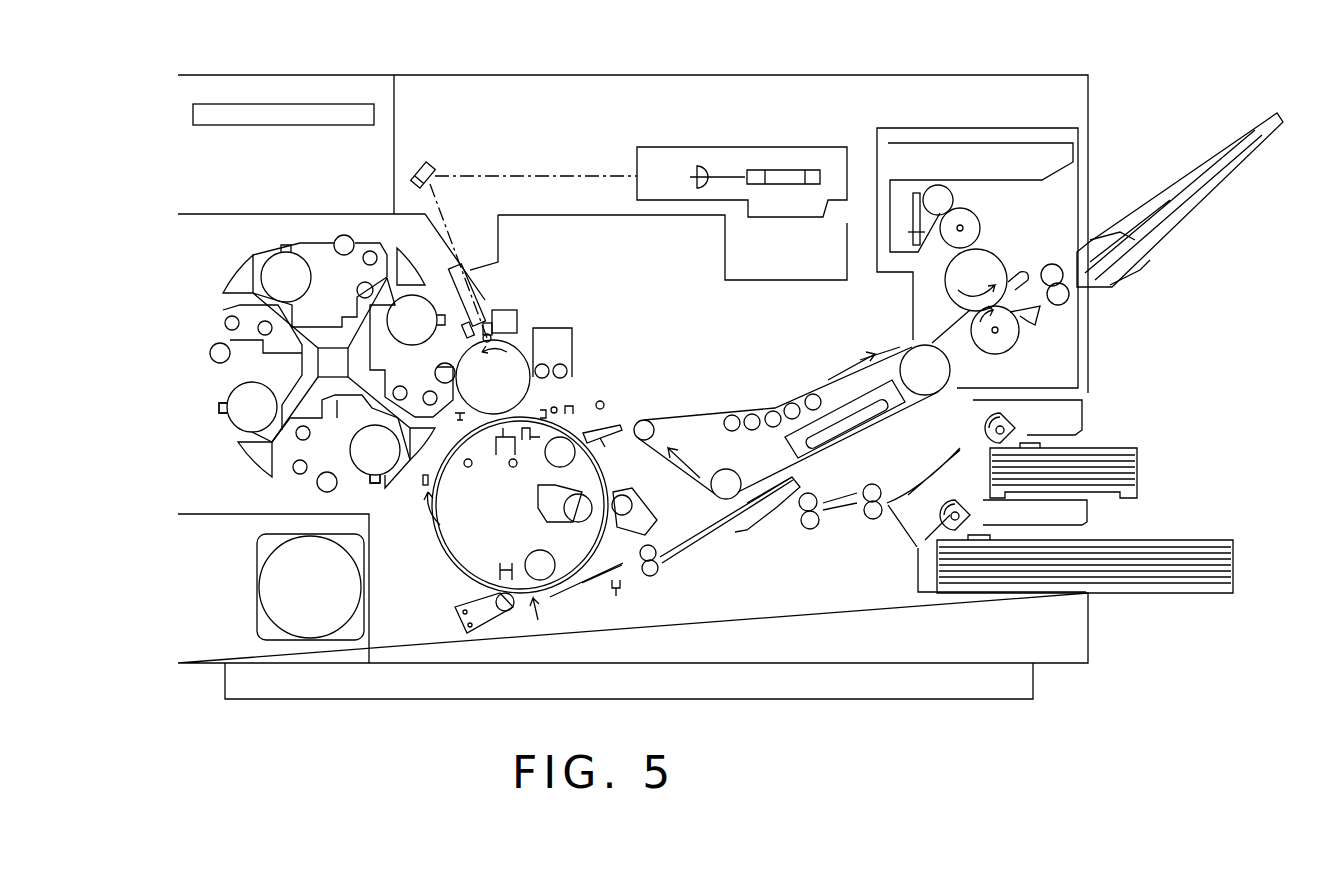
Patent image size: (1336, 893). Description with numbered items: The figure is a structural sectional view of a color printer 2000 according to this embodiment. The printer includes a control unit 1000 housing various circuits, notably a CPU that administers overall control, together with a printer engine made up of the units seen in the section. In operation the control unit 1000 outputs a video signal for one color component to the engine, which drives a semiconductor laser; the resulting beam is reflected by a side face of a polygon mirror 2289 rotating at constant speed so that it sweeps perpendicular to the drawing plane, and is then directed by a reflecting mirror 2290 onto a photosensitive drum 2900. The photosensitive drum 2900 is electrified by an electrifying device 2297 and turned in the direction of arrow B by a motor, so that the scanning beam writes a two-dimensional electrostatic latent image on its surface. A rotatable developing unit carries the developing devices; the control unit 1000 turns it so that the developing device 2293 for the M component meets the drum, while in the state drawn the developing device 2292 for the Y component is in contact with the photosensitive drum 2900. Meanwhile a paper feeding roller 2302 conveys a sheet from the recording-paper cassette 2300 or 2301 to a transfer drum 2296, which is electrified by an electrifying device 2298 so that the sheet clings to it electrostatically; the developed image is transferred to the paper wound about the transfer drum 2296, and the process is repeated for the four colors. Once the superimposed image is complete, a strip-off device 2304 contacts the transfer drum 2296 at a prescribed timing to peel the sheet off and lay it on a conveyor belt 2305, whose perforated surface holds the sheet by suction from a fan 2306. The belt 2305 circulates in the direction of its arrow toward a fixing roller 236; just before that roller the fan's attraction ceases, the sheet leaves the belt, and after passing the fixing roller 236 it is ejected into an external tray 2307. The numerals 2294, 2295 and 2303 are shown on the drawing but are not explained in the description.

The control unit 1000 is at (238, 104).
The color printer 2000 is at (178, 245).
The polygon mirror 2289 is at (785, 170).
The reflecting mirror 2290 is at (430, 164).
The developing device 2292 is at (458, 262).
The developing device 2293 is at (402, 468).
The developing unit C 2294 is at (228, 412).
The rotary developing device 2295 is at (283, 253).
The transfer drum 2296 is at (458, 585).
The electrifying device 2297 is at (525, 310).
The electrifying device 2298 is at (498, 455).
The recording-paper cassette 2300 is at (1120, 448).
The recording-paper cassette 2301 is at (1160, 540).
The paper feeding roller 2302 is at (1015, 420).
The lower feed roller 2303 is at (940, 517).
The strip-off device 2304 is at (620, 420).
The conveyor belt 2305 is at (685, 420).
The fan 2306 is at (898, 405).
The external tray 2307 is at (1163, 178).
The photosensitive drum 2900 is at (530, 330).
The fixing roller 236 is at (990, 253).
The arrow B is at (513, 412).